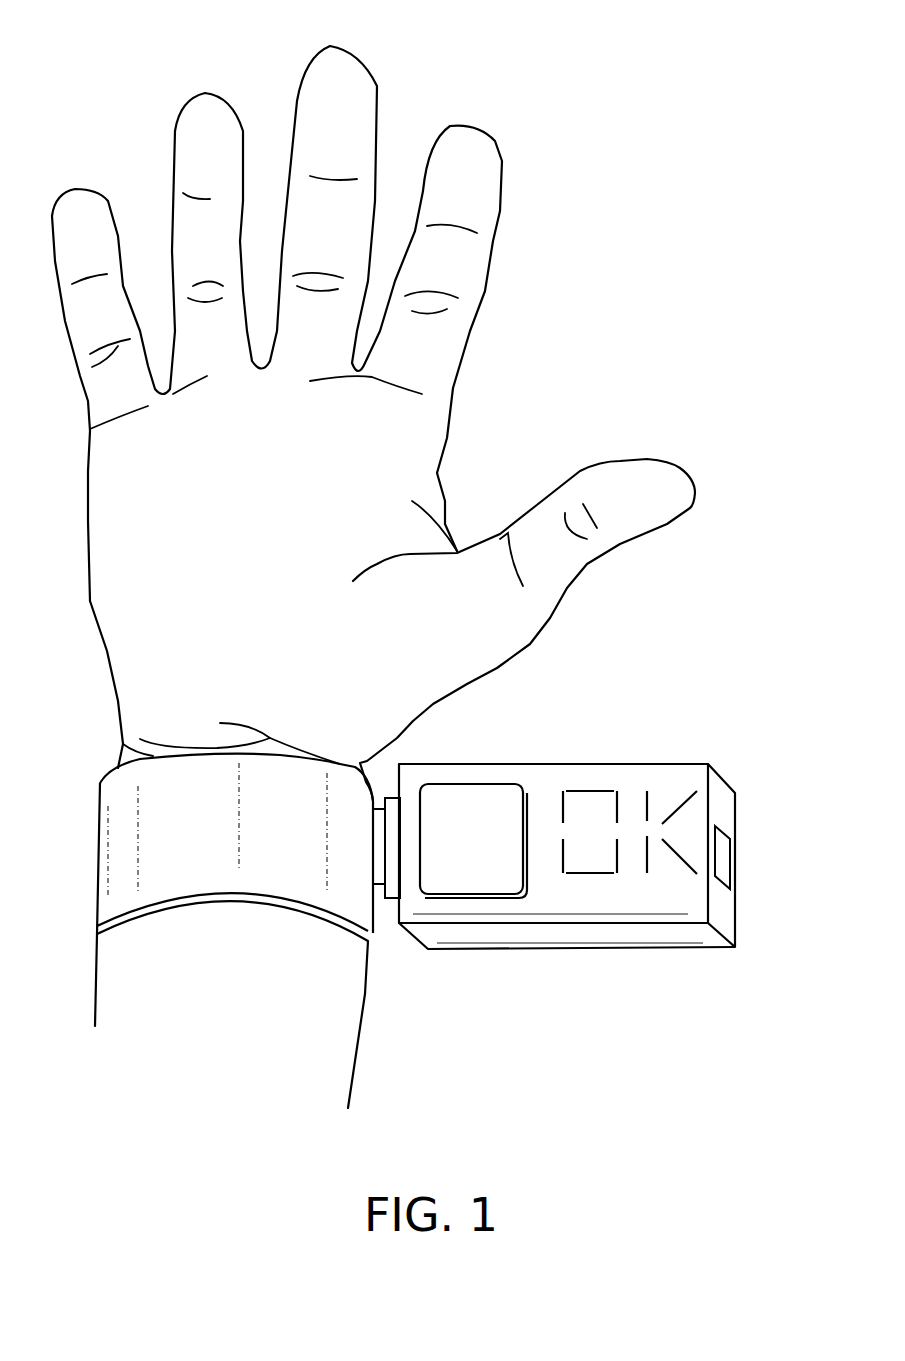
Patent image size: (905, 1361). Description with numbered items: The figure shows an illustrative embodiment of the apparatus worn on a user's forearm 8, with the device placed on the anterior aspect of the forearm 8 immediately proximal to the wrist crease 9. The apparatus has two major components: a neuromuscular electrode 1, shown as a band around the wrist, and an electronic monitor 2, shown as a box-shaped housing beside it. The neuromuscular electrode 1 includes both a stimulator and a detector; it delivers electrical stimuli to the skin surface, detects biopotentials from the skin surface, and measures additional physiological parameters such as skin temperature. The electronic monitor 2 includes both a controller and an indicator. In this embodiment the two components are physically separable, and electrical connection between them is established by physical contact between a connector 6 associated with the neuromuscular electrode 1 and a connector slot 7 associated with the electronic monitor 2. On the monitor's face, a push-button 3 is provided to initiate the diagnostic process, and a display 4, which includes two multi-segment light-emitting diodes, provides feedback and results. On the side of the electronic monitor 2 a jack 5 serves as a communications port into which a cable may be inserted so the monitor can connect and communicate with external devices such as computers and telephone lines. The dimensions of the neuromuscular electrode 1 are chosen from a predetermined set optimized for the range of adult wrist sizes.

The neuromuscular electrode 1 is at (98, 838).
The electronic monitor 2 is at (605, 763).
The push-button 3 is at (500, 782).
The display 4 is at (697, 800).
The jack 5 is at (722, 860).
The connector 6 is at (376, 885).
The connector slot 7 is at (390, 793).
The forearm 8 is at (244, 975).
The wrist crease 9 is at (180, 746).